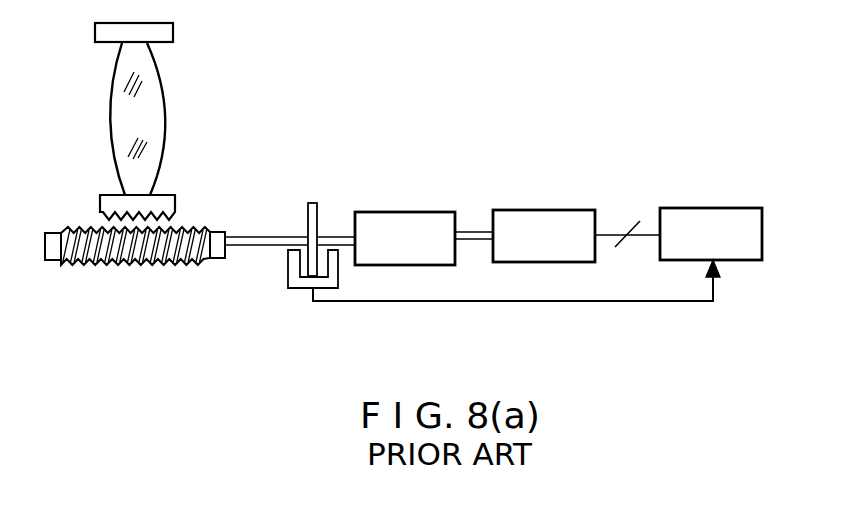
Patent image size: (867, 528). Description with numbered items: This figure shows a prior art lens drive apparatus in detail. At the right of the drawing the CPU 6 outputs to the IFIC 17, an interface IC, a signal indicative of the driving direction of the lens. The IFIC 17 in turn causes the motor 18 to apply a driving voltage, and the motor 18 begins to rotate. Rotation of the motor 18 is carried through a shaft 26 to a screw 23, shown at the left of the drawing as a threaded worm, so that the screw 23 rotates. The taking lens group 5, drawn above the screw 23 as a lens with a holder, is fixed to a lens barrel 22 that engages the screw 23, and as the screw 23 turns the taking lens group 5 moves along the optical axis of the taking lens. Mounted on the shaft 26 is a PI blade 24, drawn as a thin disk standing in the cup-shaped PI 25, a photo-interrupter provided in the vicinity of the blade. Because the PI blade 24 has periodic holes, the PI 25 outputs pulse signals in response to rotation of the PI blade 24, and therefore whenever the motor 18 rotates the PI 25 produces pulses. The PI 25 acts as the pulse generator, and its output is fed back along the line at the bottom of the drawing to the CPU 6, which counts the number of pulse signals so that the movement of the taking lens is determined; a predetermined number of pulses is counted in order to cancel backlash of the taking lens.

The taking lens group 5 is at (163, 87).
The lens barrel 22 is at (175, 207).
The screw 23 is at (213, 263).
The shaft 26 is at (282, 246).
The PI blade 24 is at (312, 203).
The PI (photo-interrupter) 25 is at (303, 288).
The motor 18 is at (410, 212).
The IFIC (interface IC) 17 is at (558, 210).
The CPU 6 is at (708, 208).